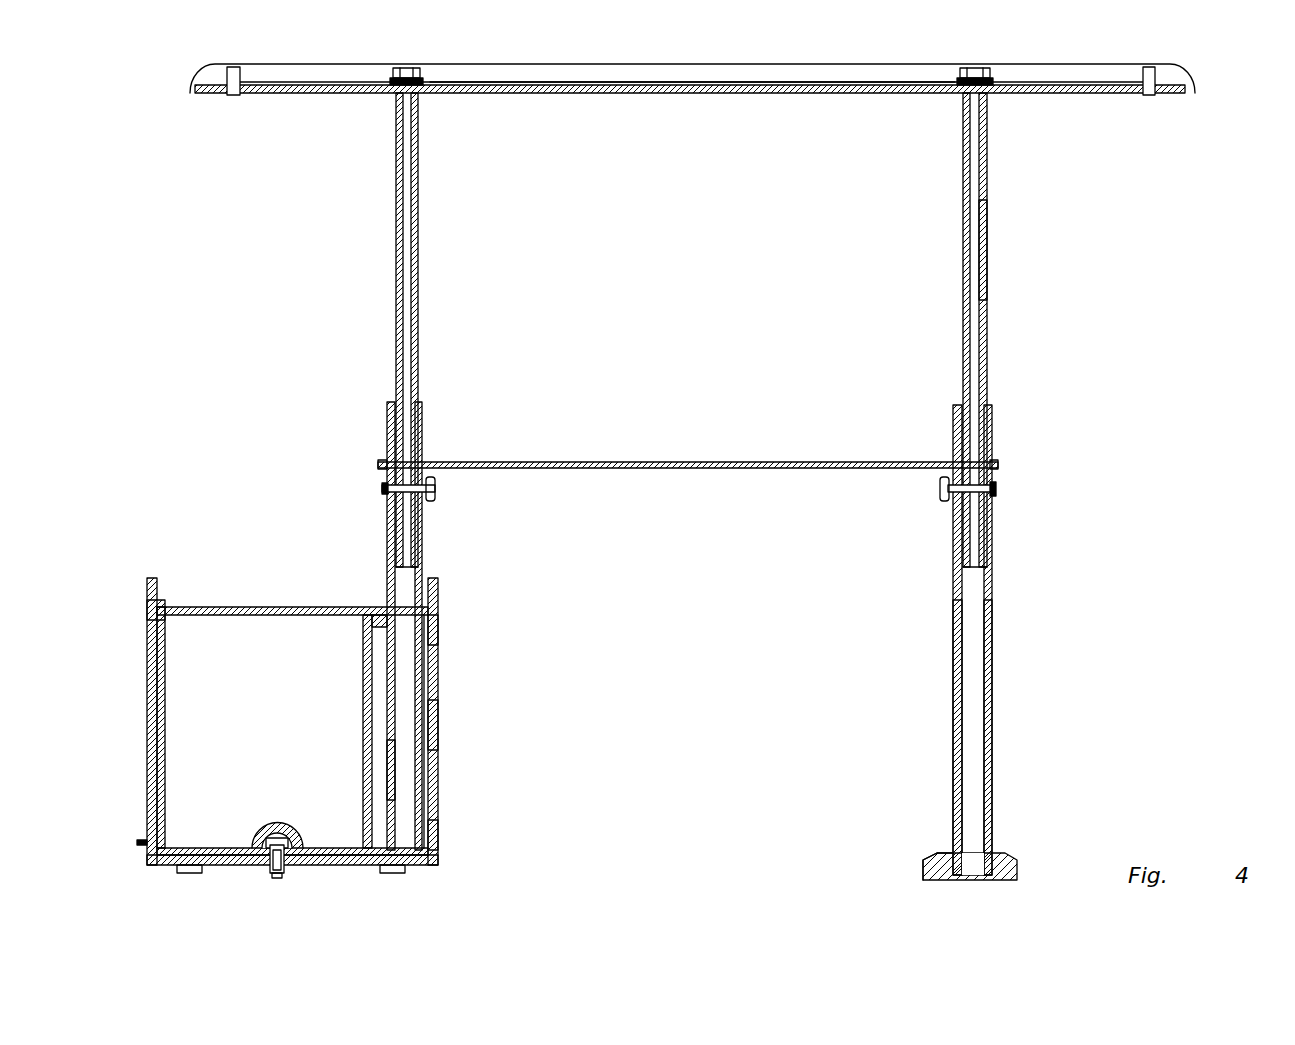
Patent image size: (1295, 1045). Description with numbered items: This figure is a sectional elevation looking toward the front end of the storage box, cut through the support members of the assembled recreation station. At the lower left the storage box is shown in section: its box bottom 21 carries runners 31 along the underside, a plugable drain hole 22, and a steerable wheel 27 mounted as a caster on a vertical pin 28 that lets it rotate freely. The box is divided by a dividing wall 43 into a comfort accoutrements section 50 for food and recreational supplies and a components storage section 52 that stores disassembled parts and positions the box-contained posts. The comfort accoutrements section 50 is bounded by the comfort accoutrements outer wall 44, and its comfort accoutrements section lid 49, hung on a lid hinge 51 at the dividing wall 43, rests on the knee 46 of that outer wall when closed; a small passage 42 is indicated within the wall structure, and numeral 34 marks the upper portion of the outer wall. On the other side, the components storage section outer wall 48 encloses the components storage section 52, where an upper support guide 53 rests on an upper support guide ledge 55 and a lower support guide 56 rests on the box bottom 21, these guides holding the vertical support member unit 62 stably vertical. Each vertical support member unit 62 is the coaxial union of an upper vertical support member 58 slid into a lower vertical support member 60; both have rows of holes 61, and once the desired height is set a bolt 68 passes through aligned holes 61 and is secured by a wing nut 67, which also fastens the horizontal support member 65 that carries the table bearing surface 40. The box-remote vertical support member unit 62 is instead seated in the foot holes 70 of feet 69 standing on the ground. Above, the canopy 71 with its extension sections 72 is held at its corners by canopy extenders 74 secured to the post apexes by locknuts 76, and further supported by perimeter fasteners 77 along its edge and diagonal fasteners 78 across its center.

The box bottom 21 is at (225, 866).
The plugable drain hole 22 is at (138, 841).
The steerable wheel 27 is at (282, 879).
The vertical pin 28 is at (283, 826).
The runners 31 is at (186, 873).
The outer side wall 34 is at (158, 586).
The table bearing surface 40 is at (580, 463).
The flow passage 42 is at (302, 728).
The dividing wall 43 is at (372, 612).
The comfort accoutrements outer wall 44 is at (148, 695).
The knee 46 is at (150, 612).
The components storage section outer wall 48 is at (440, 736).
The comfort accoutrements section lid 49 is at (290, 606).
The comfort accoutrements section 50 is at (215, 750).
The lid hinge 51 is at (366, 613).
The components storage section 52 is at (389, 776).
The upper support guide 53 is at (428, 590).
The upper support guide ledge 55 is at (440, 630).
The lower support guide 56 is at (432, 843).
The upper vertical support member 58 is at (988, 306).
The lower vertical support member 60 is at (990, 792).
The holes 61 is at (988, 287).
The vertical support member unit 62 is at (388, 422).
The horizontal support member 65 is at (433, 498).
The wing nut 67 is at (945, 497).
The bolt 68 is at (998, 490).
The feet 69 is at (1006, 855).
The foot holes 70 is at (952, 854).
The canopy 71 is at (604, 63).
The extension sections 72 is at (1085, 64).
The canopy extender 74 is at (346, 93).
The locknut 76 is at (419, 75).
The perimeter fasteners 77 is at (238, 95).
The diagonal fasteners 78 is at (740, 82).